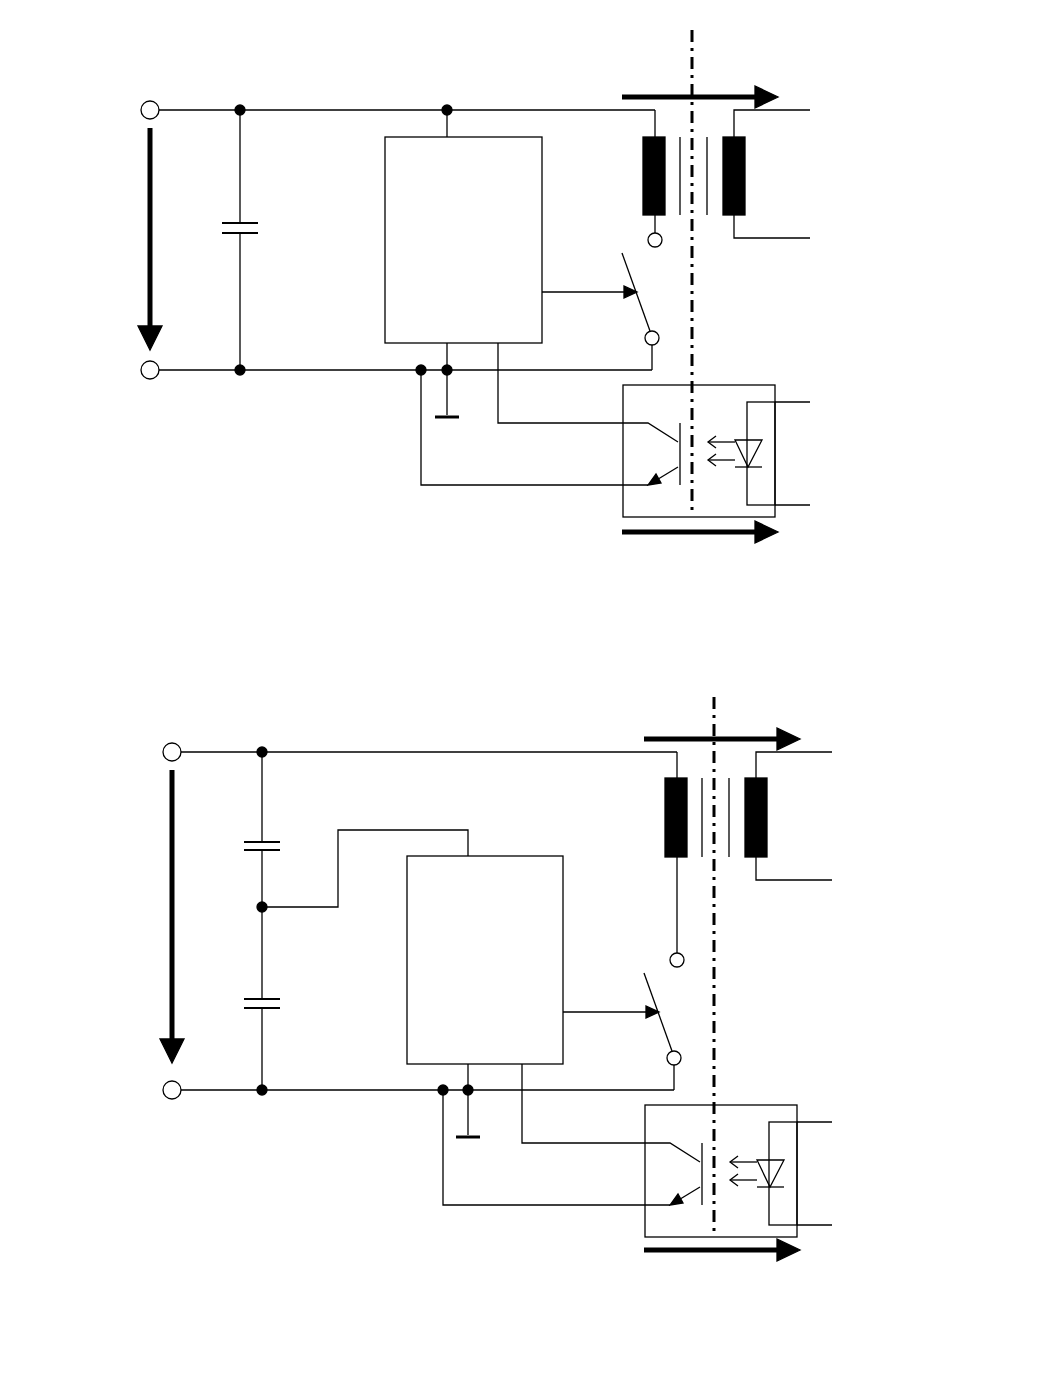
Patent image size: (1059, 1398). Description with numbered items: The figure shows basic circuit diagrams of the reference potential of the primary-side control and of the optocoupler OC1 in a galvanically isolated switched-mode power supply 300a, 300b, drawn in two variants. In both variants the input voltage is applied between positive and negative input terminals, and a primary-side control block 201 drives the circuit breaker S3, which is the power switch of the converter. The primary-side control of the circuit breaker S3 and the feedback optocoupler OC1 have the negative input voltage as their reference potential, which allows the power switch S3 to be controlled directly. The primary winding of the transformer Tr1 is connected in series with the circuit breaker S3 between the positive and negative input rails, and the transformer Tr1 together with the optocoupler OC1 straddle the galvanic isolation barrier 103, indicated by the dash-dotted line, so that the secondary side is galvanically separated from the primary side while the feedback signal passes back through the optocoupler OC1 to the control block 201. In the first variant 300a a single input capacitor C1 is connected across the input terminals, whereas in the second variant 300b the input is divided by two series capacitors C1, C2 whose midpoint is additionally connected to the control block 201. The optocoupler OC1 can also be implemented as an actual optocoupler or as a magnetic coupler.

In FIG. 3a, the galvanically isolated switched-mode power supply 300a is at (275, 93).
In FIG. 3b, the galvanically isolated switched-mode power supply 300b is at (303, 733).
In FIG. 3a, the galvanic isolation barrier 103 is at (722, 272).
In FIG. 3b, the galvanic isolation barrier 103 is at (744, 963).
In FIG. 3a, the control unit 201 is at (463, 240).
In FIG. 3b, the control unit 201 is at (485, 973).
In FIG. 3a, the capacitor C1 is at (262, 240).
In FIG. 3b, the capacitor C1 is at (244, 829).
In FIG. 3b, the capacitor C2 is at (244, 998).
In FIG. 3a, the transformer Tr1 is at (697, 178).
In FIG. 3b, the transformer Tr1 is at (719, 859).
In FIG. 3a, the circuit breaker S3 is at (600, 311).
In FIG. 3b, the circuit breaker S3 is at (622, 1031).
In FIG. 3a, the optocoupler OC1 is at (615, 430).
In FIG. 3b, the optocoupler OC1 is at (637, 1150).